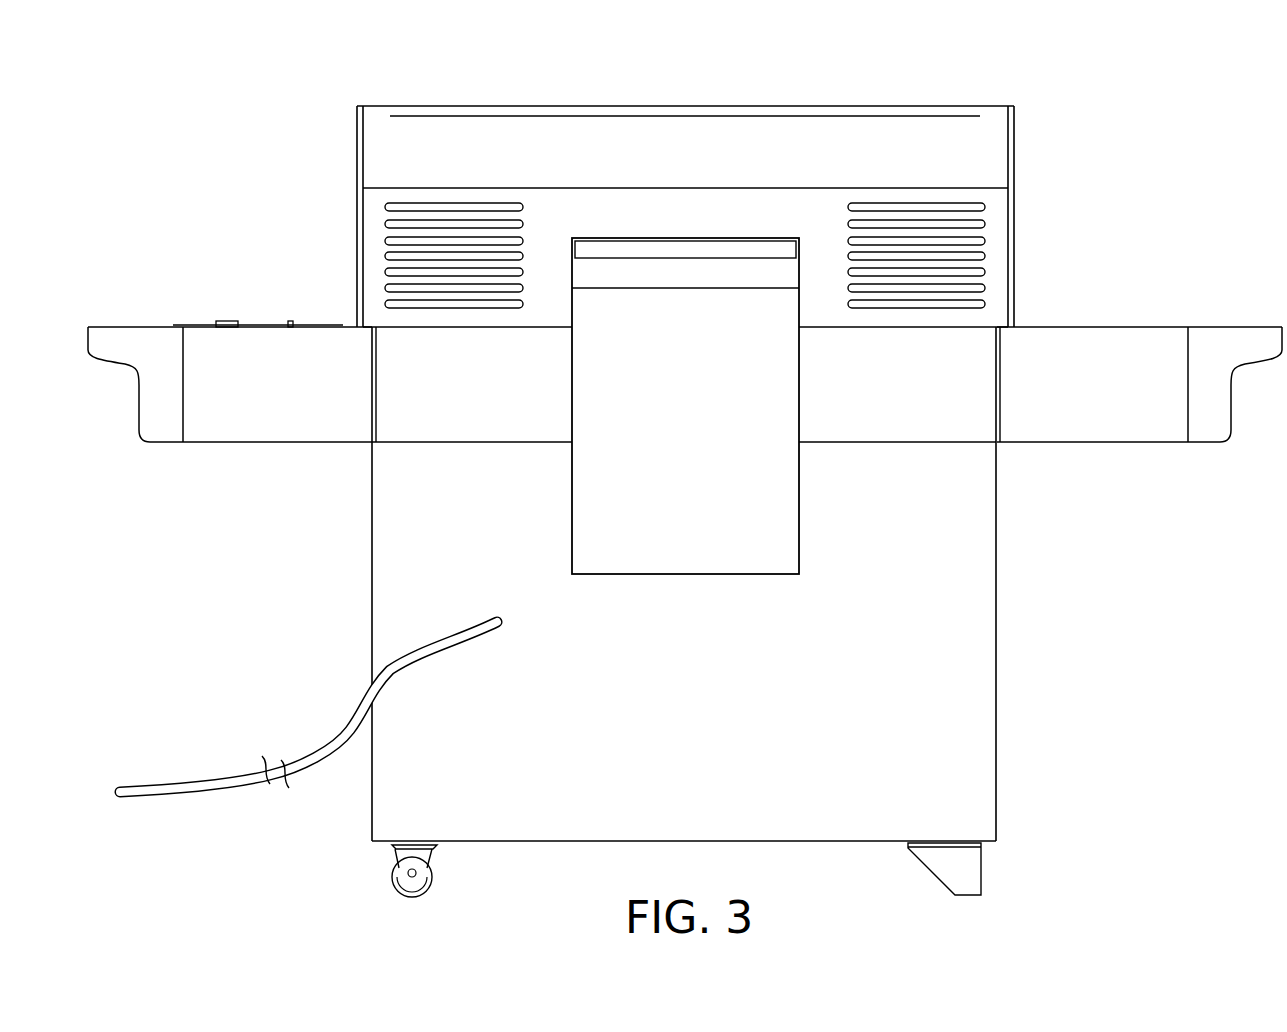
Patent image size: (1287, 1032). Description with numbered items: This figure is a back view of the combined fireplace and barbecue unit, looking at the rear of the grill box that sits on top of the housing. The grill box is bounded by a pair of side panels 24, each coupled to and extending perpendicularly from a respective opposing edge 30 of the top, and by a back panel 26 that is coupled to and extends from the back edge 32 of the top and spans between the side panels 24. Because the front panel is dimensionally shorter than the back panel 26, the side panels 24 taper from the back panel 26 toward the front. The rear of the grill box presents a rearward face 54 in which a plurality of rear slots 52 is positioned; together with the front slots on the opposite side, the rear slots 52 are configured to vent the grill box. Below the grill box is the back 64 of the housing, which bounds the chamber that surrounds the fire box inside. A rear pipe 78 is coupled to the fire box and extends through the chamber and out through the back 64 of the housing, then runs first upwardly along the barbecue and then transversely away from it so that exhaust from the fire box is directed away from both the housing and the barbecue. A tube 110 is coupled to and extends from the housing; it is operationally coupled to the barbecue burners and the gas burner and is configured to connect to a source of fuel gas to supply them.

The side panels 24 is at (360, 204).
The back panel 26 is at (413, 362).
The opposing edge 30 is at (815, 427).
The back edge 32 is at (445, 441).
The rear slots 52 is at (850, 256).
The rearward face 54 is at (815, 285).
The back 64 is at (908, 700).
The rear pipe 78 is at (758, 390).
The tube 110 is at (331, 745).